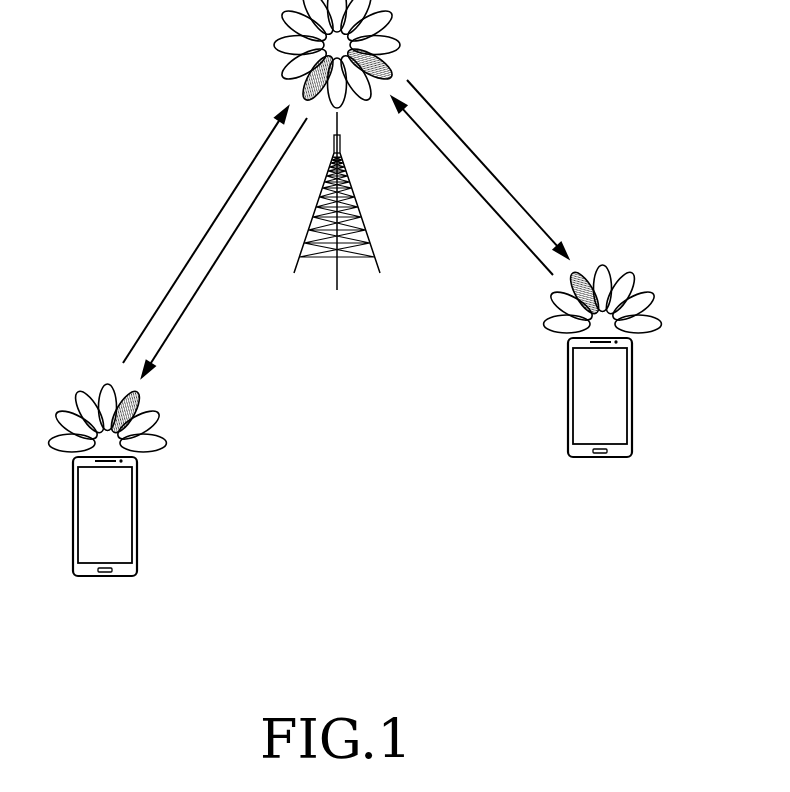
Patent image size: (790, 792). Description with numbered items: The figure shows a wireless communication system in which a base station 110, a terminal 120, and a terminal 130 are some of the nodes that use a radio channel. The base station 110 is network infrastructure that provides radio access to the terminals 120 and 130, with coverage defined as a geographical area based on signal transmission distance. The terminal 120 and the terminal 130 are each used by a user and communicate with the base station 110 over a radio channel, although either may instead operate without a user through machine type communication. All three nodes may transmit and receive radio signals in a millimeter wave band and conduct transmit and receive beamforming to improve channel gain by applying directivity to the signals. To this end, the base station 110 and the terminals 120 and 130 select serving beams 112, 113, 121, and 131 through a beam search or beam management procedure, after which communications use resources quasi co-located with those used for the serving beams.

The base station 110 is at (356, 198).
The serving beam 112 is at (297, 94).
The serving beam 113 is at (397, 68).
The terminal 120 is at (139, 487).
The serving beam 121 is at (139, 393).
The terminal 130 is at (633, 370).
The serving beam 131 is at (569, 283).